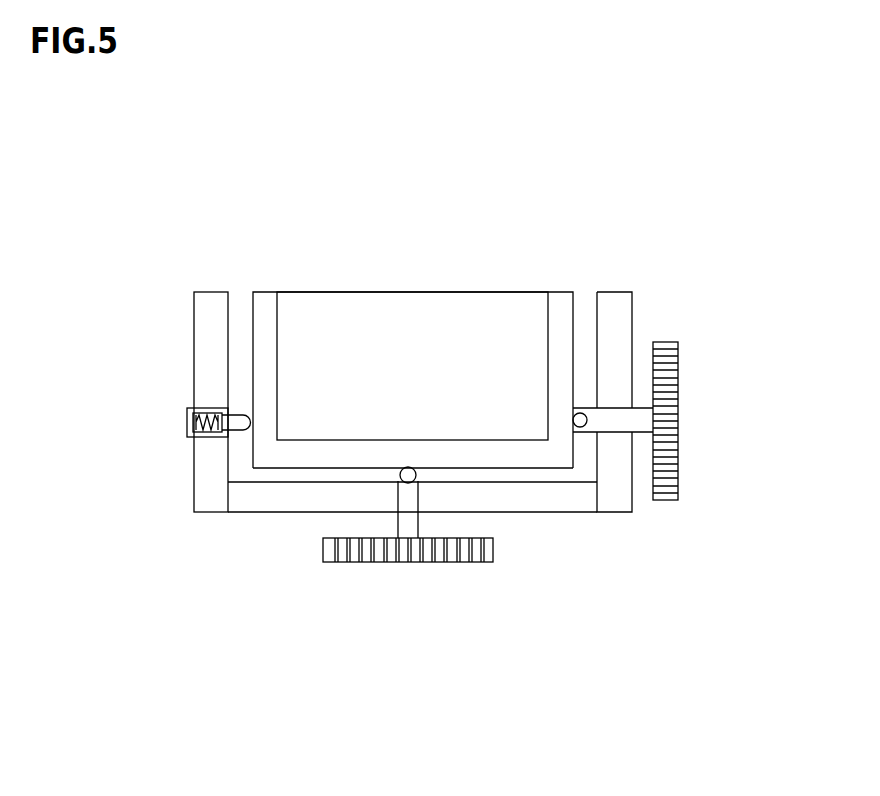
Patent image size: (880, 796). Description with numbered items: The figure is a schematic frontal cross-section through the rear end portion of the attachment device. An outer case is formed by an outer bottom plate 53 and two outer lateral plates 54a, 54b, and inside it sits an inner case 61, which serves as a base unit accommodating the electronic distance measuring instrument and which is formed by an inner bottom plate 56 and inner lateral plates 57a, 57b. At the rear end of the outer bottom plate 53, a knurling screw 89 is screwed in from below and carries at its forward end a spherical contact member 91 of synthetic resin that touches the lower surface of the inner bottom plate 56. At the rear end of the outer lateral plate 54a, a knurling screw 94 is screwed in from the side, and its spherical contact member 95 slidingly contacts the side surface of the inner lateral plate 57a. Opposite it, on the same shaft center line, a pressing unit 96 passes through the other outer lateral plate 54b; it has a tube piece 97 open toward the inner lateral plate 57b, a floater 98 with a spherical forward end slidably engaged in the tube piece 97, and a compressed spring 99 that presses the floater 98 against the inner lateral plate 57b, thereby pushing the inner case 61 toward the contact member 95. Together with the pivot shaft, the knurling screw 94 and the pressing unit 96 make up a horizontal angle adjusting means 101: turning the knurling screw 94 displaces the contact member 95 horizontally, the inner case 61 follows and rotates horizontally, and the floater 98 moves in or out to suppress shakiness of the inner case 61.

The outer bottom plate 53 is at (563, 513).
The outer lateral plate 54a is at (632, 327).
The outer lateral plate 54b is at (194, 308).
The inner bottom plate 56 is at (521, 468).
The inner lateral plate 57a is at (573, 308).
The inner lateral plate 57b is at (252, 308).
The inner case 61 is at (462, 290).
The knurling screw 89 is at (447, 562).
The contact member 91 is at (403, 470).
The knurling screw 94 is at (678, 457).
The contact member 95 is at (576, 414).
The pressing unit 96 is at (184, 420).
The tube piece 97 is at (210, 412).
The floater 98 is at (242, 408).
The spring 99 is at (200, 437).
The horizontal angle adjusting means 101 is at (694, 427).